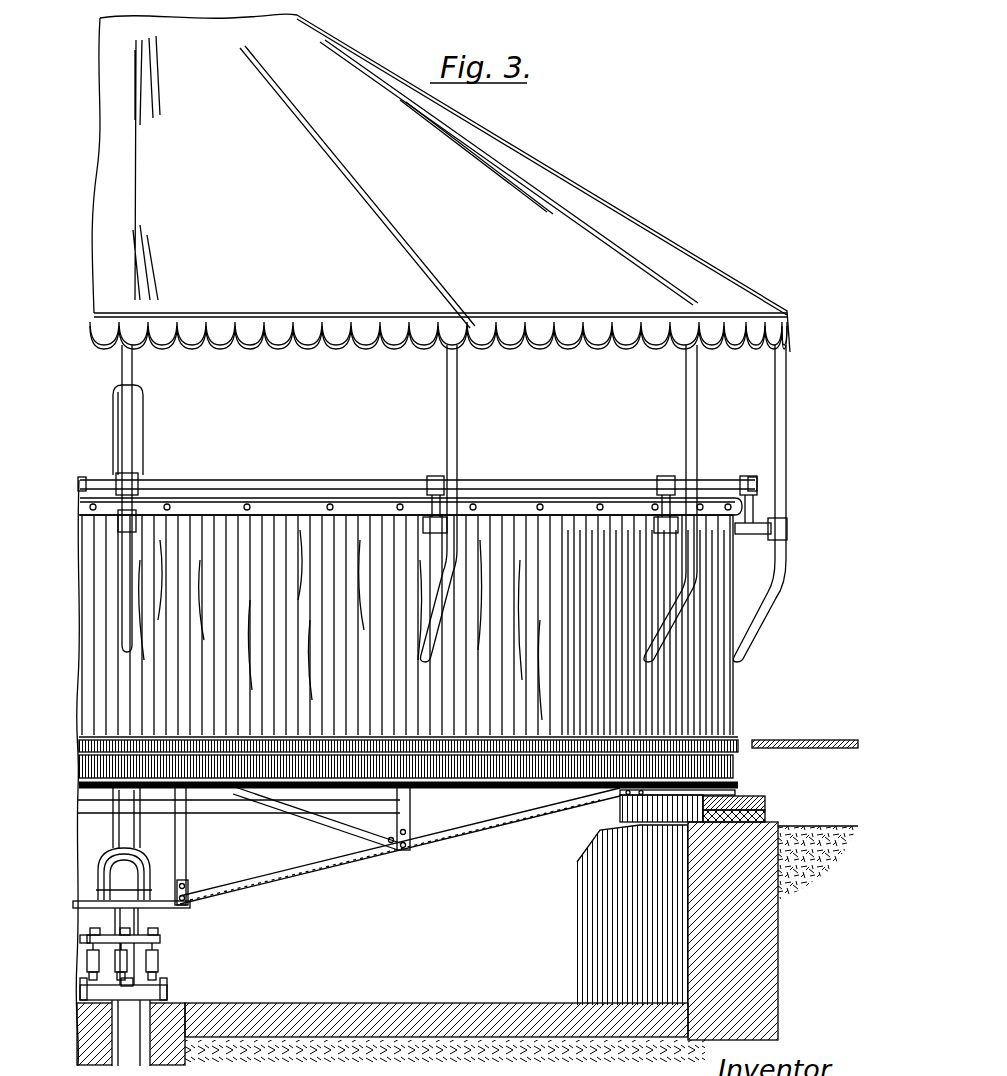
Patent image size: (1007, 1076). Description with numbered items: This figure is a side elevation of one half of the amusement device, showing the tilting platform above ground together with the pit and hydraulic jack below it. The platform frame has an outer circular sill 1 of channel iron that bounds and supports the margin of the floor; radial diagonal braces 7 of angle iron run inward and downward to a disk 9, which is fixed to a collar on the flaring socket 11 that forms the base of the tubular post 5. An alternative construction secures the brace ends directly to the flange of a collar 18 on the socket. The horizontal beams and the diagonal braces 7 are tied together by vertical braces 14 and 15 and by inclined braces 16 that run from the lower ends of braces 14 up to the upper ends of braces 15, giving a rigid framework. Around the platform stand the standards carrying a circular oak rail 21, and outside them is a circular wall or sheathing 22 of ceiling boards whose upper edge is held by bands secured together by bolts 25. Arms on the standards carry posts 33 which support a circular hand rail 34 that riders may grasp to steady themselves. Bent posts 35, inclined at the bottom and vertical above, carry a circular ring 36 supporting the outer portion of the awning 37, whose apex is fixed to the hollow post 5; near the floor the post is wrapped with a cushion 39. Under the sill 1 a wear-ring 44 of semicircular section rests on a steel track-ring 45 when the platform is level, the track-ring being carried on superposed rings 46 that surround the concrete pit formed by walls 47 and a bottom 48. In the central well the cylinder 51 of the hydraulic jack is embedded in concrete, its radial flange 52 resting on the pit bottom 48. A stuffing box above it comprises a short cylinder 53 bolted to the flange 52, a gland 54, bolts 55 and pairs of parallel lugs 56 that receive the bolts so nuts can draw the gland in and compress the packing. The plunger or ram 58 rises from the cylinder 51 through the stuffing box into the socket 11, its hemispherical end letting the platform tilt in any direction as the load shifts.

The outer circular sill 1 is at (712, 770).
The tubular post 5 is at (133, 380).
The diagonal braces 7 is at (365, 848).
The disk 9 is at (160, 906).
The flaring socket 11 is at (150, 870).
The vertical braces 14 is at (405, 815).
The vertical braces 15 is at (186, 836).
The inclined braces 16 is at (340, 812).
The collar 18 is at (189, 892).
The rail 21 is at (218, 500).
The circular wall or sheathing 22 is at (735, 702).
The bolts 25 is at (333, 505).
The posts 33 is at (445, 505).
The circular hand rail 34 is at (320, 486).
The posts 35 is at (137, 455).
The circular ring 36 is at (581, 340).
The awning 37 is at (332, 338).
The cushion 39 is at (148, 407).
The wear-ring 44 is at (745, 790).
The track-ring 45 is at (765, 800).
The superposed rings 46 is at (765, 812).
The pit walls 47 is at (760, 931).
The pit bottom 48 is at (510, 1010).
The cylinder 51 is at (160, 958).
The radial flange 52 is at (168, 993).
The short cylinder 53 is at (130, 984).
The gland 54 is at (100, 937).
The bolts 55 is at (160, 940).
The parallel lugs 56 is at (160, 966).
The plunger or ram 58 is at (138, 925).